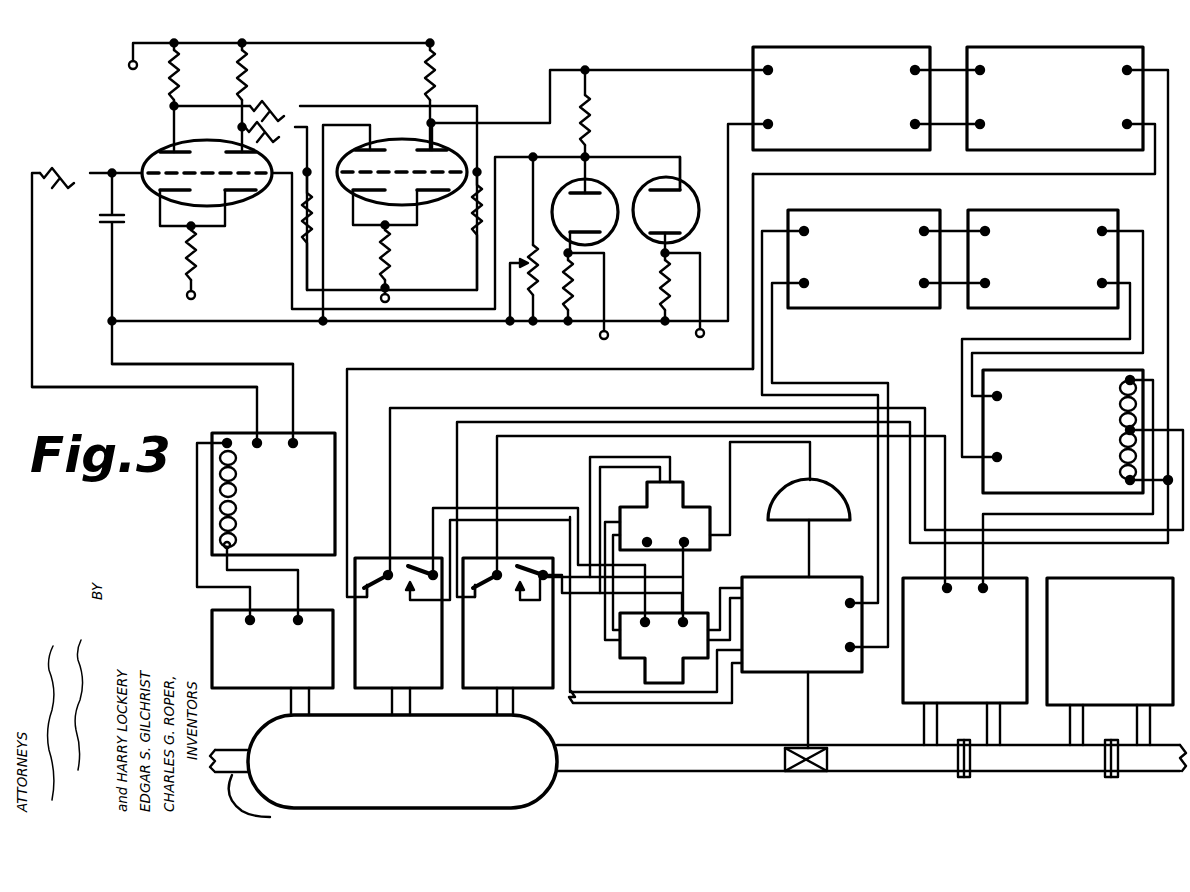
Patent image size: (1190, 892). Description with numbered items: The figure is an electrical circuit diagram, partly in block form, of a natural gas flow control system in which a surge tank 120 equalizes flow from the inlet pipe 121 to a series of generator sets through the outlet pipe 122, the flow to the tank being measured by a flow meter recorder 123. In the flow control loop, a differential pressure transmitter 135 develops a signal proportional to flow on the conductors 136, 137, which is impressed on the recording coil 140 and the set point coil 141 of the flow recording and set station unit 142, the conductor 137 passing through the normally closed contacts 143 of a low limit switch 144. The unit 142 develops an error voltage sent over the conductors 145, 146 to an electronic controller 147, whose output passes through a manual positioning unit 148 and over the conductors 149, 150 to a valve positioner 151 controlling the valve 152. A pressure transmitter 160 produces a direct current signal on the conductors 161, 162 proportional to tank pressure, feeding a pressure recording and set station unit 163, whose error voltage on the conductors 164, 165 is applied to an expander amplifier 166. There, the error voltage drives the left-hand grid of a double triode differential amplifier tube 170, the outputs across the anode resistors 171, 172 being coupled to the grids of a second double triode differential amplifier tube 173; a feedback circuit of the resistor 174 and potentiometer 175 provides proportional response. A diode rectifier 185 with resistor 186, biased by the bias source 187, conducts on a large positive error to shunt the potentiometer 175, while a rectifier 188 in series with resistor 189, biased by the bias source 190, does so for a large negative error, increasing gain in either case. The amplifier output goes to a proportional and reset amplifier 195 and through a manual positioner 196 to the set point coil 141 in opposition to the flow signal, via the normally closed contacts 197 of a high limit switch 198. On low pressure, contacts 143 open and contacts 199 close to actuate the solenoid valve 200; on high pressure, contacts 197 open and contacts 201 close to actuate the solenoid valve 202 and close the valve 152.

The expander amplifier 166 is at (462, 46).
The anode resistor 171 is at (165, 90).
The anode resistor 172 is at (245, 78).
The double triode differential amplifier tube 170 is at (166, 149).
The second double triode differential amplifier tube 173 is at (437, 205).
The resistor 174 is at (588, 131).
The potentiometer 175 is at (528, 247).
The diode rectifier 185 is at (611, 192).
The resistor 186 is at (578, 284).
The bias source 187 is at (607, 335).
The rectifier 188 is at (683, 192).
The resistor 189 is at (660, 300).
The bias source 190 is at (701, 307).
The proportional and reset amplifier 195 is at (752, 100).
The manual positioner 196 is at (1089, 45).
The manual positioning unit 148 is at (908, 207).
The electronic controller 147 is at (1080, 207).
The conductor 146 is at (1012, 323).
The conductor 145 is at (1090, 325).
The recording coil 140 is at (1063, 420).
The set point coil 141 is at (1120, 472).
The flow recording and set station unit 142 is at (983, 372).
The conductor 149 is at (842, 385).
The conductor 150 is at (753, 387).
The conductor 136 is at (983, 514).
The conductor 137 is at (945, 565).
The differential pressure transmitter 135 is at (1030, 580).
The flow meter recorder 123 is at (1145, 571).
The conductor 164 is at (232, 362).
The conductor 165 is at (110, 385).
The pressure recording and set station unit 163 is at (292, 432).
The conductor 162 is at (197, 497).
The conductor 161 is at (292, 584).
The pressure transmitter 160 is at (335, 600).
The normally closed contacts 197 is at (386, 573).
The contacts 201 is at (432, 573).
The normally closed switch contacts 143 is at (496, 573).
The contacts 199 is at (542, 573).
The high limit switch 198 is at (428, 694).
The low limit switch 144 is at (480, 694).
The solenoid valve 202 is at (686, 484).
The solenoid valve 200 is at (692, 610).
The valve positioner 151 is at (822, 669).
The valve 152 is at (808, 773).
The outlet pipe 122 is at (245, 749).
The inlet pipe 121 is at (594, 761).
The surge tank 120 is at (530, 786).